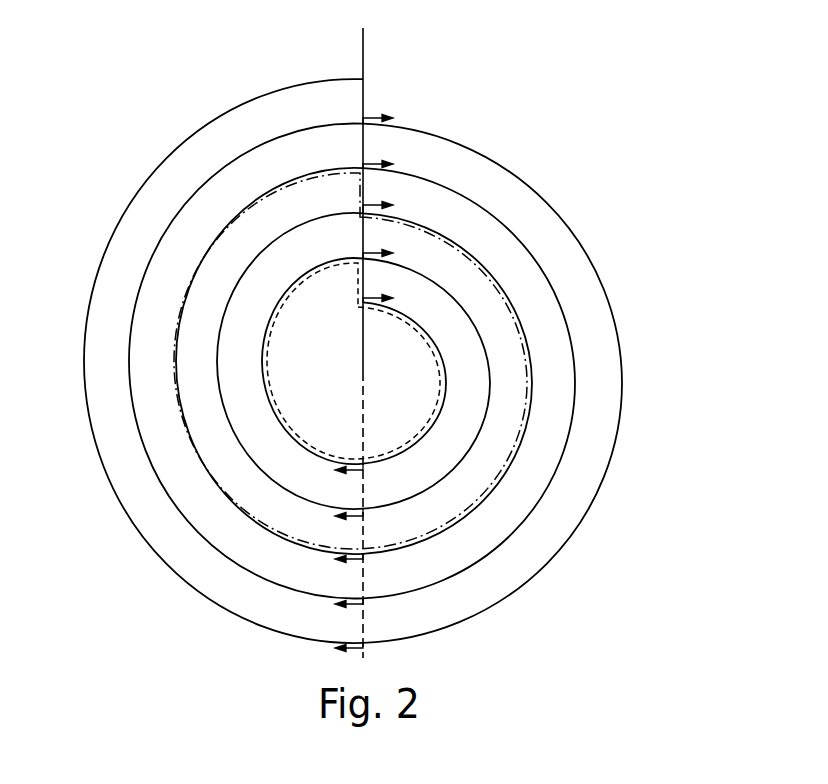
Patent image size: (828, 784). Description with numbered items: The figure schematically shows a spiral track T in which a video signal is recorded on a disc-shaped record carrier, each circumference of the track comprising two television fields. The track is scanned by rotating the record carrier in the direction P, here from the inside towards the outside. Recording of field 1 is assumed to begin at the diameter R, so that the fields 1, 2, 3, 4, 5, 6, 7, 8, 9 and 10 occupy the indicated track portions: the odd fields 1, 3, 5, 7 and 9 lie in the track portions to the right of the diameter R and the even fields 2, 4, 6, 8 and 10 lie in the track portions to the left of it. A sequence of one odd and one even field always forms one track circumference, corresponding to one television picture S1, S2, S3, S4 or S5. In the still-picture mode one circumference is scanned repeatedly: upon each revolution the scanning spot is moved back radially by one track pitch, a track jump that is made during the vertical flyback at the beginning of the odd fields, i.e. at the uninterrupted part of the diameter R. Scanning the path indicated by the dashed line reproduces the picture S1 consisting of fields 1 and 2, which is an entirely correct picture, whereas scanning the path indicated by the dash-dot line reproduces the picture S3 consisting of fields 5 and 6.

The spiral track T is at (537, 190).
The diameter R is at (363, 52).
The scanning direction P is at (353, 361).
The field 1 is at (378, 287).
The field 2 is at (349, 479).
The field 3 is at (378, 243).
The field 4 is at (349, 524).
The field 5 is at (378, 198).
The field 6 is at (349, 568).
The field 7 is at (378, 153).
The field 8 is at (349, 613).
The field 9 is at (378, 108).
The field 10 is at (350, 659).
The television picture S1 is at (446, 384).
The television picture S2 is at (490, 384).
The television picture S3 is at (532, 384).
The television picture S4 is at (575, 384).
The television picture S5 is at (622, 384).